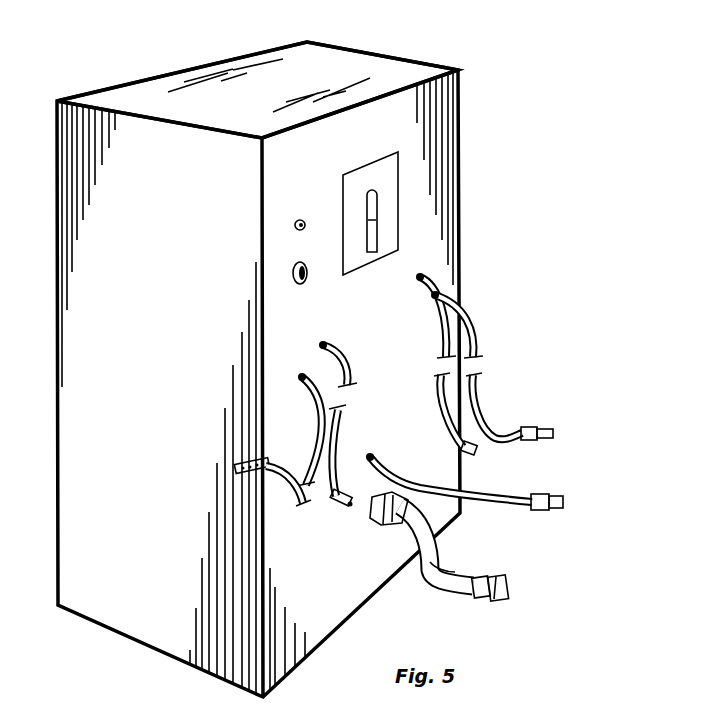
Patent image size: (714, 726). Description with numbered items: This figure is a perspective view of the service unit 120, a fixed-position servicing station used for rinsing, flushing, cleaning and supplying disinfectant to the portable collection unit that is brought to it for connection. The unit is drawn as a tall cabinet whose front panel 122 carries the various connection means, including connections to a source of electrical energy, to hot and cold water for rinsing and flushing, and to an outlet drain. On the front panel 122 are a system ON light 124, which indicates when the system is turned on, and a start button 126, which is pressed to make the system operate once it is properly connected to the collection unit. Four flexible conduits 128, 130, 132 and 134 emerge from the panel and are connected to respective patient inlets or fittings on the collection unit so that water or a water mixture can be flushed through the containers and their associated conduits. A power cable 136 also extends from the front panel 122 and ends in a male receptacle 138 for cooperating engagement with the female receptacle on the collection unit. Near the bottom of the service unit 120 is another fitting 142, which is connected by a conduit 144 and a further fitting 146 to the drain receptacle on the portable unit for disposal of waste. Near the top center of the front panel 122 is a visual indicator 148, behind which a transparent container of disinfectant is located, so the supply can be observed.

The service unit 120 is at (461, 252).
The front panel 122 is at (395, 104).
The system ON light 124 is at (300, 213).
The start button 126 is at (293, 275).
The conduit 128 is at (453, 332).
The conduit 130 is at (347, 362).
The conduit 132 is at (474, 393).
The conduit 134 is at (317, 425).
The power cable 136 is at (397, 455).
The male receptacle 138 is at (563, 496).
The fitting 142 is at (398, 522).
The conduit 144 is at (448, 573).
The fitting 146 is at (500, 600).
The visual indicator 148 is at (377, 224).